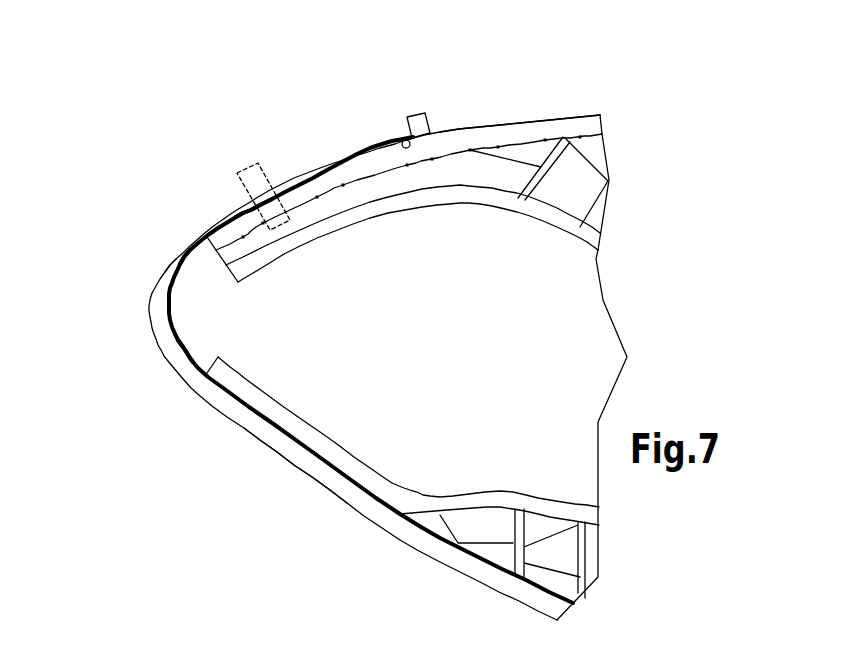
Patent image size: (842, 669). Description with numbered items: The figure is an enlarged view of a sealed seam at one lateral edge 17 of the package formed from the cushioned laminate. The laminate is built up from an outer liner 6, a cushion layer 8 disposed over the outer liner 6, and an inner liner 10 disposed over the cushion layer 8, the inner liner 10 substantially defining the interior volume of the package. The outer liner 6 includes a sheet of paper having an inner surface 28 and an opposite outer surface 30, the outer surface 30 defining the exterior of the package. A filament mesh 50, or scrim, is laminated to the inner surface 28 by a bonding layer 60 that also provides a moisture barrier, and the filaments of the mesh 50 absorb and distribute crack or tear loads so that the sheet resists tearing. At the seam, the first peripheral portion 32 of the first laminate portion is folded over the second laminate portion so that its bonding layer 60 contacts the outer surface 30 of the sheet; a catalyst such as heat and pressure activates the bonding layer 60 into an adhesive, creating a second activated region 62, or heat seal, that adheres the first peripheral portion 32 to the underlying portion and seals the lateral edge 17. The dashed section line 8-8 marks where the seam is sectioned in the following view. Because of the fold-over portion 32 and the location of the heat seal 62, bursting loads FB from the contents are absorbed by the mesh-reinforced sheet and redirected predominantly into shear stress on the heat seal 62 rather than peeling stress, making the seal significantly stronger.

The outer liner 6 is at (535, 130).
The cushion layer 8 is at (565, 185).
The inner liner 10 is at (355, 215).
The lateral edge of the package 17 is at (147, 300).
The inner surface 28 is at (407, 128).
The outer surface 30 is at (470, 127).
The first peripheral portion 32 is at (343, 147).
The filament mesh 50 is at (186, 250).
The bonding layer 60 is at (185, 358).
The second activated region 62 is at (250, 198).
The bursting loads FB is at (455, 203).
The section line 8-8 is at (247, 167).